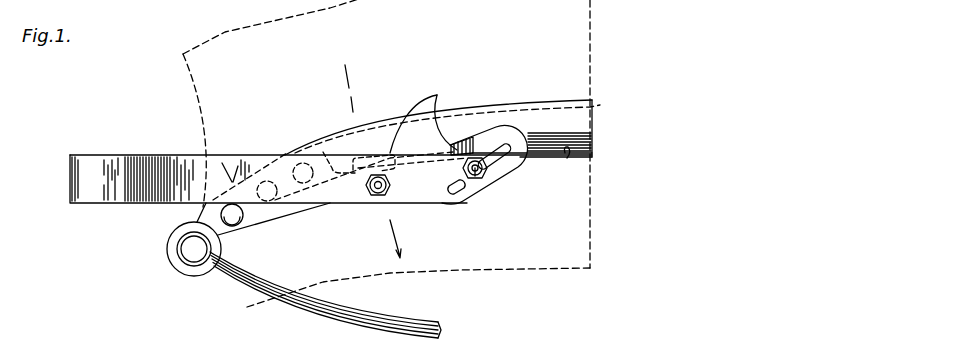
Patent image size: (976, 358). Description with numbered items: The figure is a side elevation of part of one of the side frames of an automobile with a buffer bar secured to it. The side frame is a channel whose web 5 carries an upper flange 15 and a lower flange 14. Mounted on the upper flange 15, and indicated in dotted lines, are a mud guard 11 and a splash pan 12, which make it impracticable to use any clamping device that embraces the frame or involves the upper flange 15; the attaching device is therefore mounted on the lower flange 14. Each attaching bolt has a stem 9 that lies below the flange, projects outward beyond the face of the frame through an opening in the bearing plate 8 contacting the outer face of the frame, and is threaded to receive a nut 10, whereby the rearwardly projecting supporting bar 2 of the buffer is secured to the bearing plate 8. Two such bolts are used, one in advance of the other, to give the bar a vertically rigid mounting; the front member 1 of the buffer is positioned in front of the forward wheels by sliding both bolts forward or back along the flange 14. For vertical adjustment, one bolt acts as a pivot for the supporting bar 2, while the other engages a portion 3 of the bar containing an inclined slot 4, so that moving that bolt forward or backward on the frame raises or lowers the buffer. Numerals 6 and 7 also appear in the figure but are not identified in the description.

The front member 1 is at (118, 190).
The supporting bar 2 is at (417, 180).
The portion of the bar 3 is at (341, 81).
The inclined slot 4 is at (462, 193).
The web 5 is at (583, 125).
The pivot 6 is at (193, 250).
The leaf spring 7 is at (291, 289).
The bearing plate 8 is at (423, 114).
The stem 9 is at (370, 190).
The nut 10 is at (373, 193).
The mud guard 11 is at (593, 44).
The splash pan 12 is at (593, 226).
The lower flange 14 is at (567, 158).
The upper flange 15 is at (600, 105).